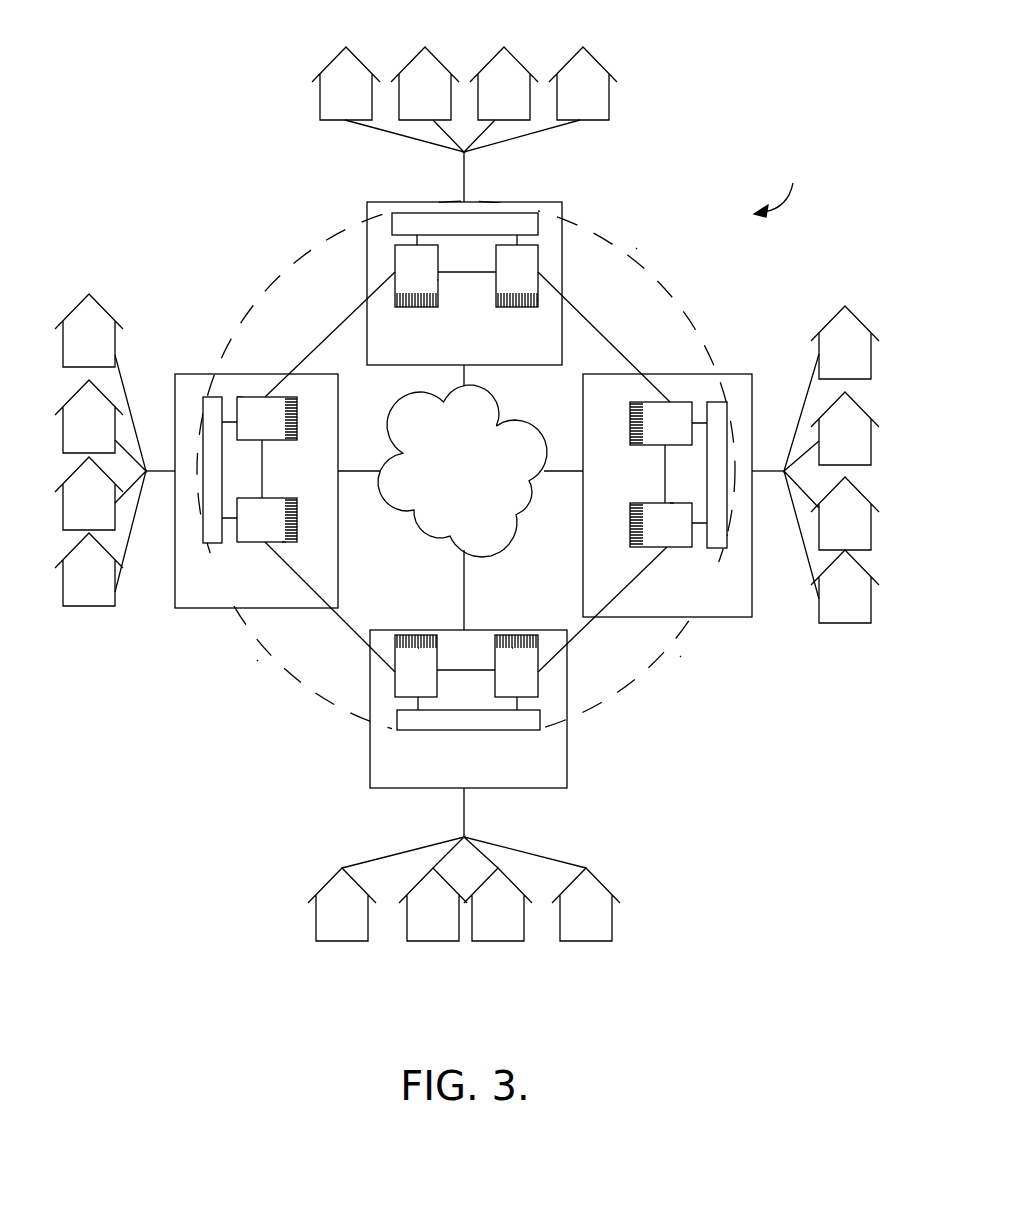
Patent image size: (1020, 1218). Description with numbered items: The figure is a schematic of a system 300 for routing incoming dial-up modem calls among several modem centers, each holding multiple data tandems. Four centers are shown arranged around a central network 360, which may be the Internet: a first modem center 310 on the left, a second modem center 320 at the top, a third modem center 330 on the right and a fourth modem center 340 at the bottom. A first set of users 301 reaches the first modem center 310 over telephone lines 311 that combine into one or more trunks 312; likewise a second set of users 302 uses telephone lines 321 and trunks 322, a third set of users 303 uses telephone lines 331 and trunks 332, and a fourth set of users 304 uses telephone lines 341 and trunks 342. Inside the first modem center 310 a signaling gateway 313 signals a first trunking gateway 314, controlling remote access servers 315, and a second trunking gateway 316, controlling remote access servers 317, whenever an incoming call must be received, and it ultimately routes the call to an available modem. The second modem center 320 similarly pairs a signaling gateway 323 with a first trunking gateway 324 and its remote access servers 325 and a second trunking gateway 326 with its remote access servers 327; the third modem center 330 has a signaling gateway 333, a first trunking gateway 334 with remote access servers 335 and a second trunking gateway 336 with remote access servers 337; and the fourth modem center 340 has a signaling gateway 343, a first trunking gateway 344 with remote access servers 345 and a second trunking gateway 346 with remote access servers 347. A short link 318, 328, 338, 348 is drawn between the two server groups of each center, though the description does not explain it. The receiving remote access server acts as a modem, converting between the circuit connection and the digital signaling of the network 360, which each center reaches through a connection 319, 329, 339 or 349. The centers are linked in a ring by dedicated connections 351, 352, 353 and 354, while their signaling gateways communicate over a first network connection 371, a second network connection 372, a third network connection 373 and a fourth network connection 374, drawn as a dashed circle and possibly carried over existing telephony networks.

The system 300 is at (783, 185).
The first set of users 301 is at (103, 306).
The second set of users 302 is at (609, 97).
The third set of users 303 is at (857, 308).
The fourth set of users 304 is at (581, 943).
The first modem center 310 is at (255, 609).
The telephone lines 311 is at (128, 372).
The trunks 312 is at (164, 476).
The SS7 signaling gateway 313 is at (198, 438).
The first trunking gateway 314 is at (256, 396).
The remote access servers 315 is at (298, 422).
The second trunking gateway 316 is at (283, 548).
The remote access servers 317 is at (298, 503).
The first modem center internal link 318 is at (263, 472).
The connection 319 is at (361, 471).
The second modem center 320 is at (397, 201).
The telephone lines 321 is at (524, 141).
The trunks 322 is at (463, 185).
The signaling gateway 323 is at (533, 211).
The first trunking gateway 324 is at (439, 281).
The remote access servers 325 is at (395, 298).
The second trunking gateway 326 is at (540, 267).
The remote access servers 327 is at (539, 298).
The second modem center internal link 328 is at (486, 272).
The connection 329 is at (463, 378).
The third modem center 330 is at (582, 416).
The telephone lines 331 is at (800, 420).
The trunks 332 is at (762, 477).
The signaling gateway 333 is at (728, 536).
The first trunking gateway 334 is at (678, 402).
The remote access servers 335 is at (629, 412).
The second trunking gateway 336 is at (671, 503).
The remote access servers 337 is at (629, 536).
The third modem center internal link 338 is at (664, 458).
The connection 339 is at (552, 475).
The fourth modem center 340 is at (485, 789).
The telephone lines 341 is at (420, 856).
The trunks 342 is at (456, 808).
The signaling gateway 343 is at (396, 720).
The first trunking gateway 344 is at (539, 688).
The remote access servers 345 is at (513, 647).
The second trunking gateway 346 is at (395, 685).
The remote access servers 347 is at (418, 647).
The fourth modem center internal link 348 is at (445, 670).
The connection 349 is at (462, 582).
The dedicated connection 351 is at (335, 337).
The dedicated connection 352 is at (605, 342).
The dedicated connection 353 is at (590, 627).
The dedicated connection 354 is at (352, 632).
The network 360 is at (506, 545).
The first network connection 371 is at (285, 263).
The second network connection 372 is at (635, 252).
The third network connection 373 is at (679, 655).
The fourth network connection 374 is at (260, 658).